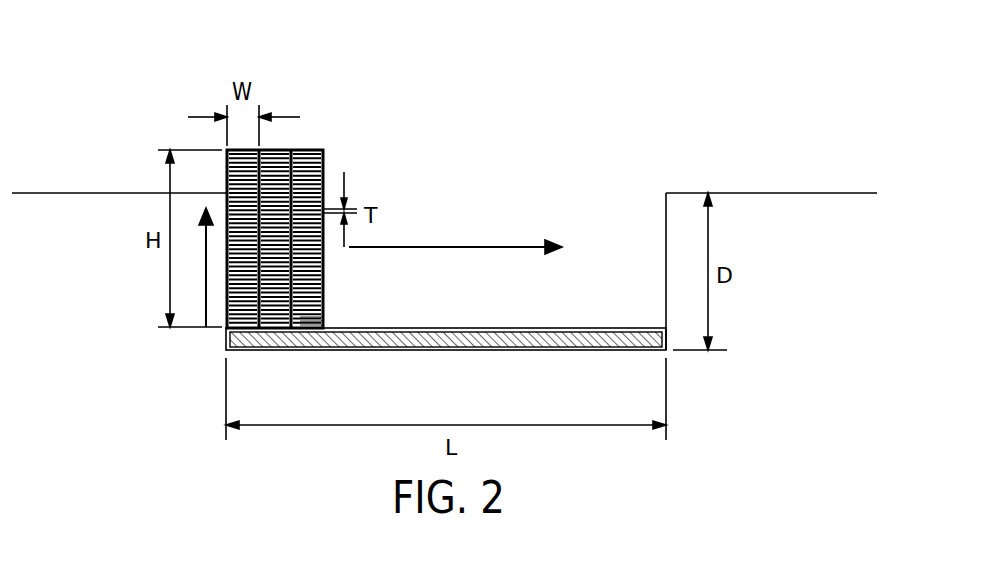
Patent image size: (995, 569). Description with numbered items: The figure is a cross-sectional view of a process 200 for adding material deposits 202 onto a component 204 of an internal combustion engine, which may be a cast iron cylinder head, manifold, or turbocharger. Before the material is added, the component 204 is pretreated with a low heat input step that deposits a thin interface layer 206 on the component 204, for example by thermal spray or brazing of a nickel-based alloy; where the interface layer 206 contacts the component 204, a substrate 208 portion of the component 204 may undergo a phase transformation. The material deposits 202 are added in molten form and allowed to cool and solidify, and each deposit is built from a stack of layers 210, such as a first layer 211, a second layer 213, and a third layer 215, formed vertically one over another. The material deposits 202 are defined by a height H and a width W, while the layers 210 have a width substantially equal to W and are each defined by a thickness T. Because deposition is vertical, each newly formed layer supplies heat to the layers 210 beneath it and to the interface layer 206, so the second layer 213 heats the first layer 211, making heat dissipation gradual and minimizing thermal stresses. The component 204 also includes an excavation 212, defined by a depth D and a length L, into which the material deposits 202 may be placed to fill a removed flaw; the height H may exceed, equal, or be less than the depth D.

The process 200 is at (605, 102).
The material deposits 202 is at (218, 267).
The component 204 is at (769, 180).
The interface layer 206 is at (617, 332).
The substrate 208 is at (491, 352).
The layers 210 is at (304, 172).
The first layer 211 is at (321, 325).
The excavation 212 is at (665, 213).
The second layer 213 is at (321, 321).
The third layer 215 is at (321, 317).